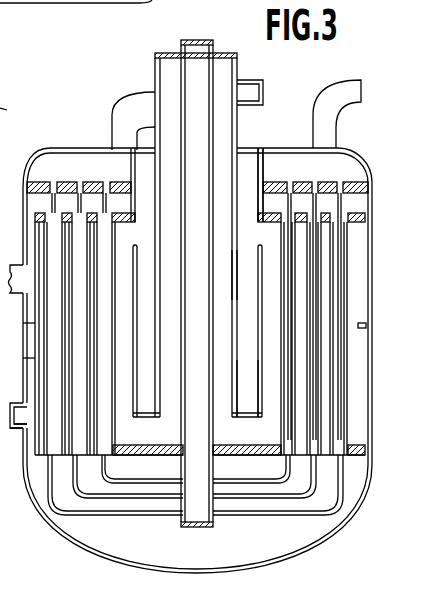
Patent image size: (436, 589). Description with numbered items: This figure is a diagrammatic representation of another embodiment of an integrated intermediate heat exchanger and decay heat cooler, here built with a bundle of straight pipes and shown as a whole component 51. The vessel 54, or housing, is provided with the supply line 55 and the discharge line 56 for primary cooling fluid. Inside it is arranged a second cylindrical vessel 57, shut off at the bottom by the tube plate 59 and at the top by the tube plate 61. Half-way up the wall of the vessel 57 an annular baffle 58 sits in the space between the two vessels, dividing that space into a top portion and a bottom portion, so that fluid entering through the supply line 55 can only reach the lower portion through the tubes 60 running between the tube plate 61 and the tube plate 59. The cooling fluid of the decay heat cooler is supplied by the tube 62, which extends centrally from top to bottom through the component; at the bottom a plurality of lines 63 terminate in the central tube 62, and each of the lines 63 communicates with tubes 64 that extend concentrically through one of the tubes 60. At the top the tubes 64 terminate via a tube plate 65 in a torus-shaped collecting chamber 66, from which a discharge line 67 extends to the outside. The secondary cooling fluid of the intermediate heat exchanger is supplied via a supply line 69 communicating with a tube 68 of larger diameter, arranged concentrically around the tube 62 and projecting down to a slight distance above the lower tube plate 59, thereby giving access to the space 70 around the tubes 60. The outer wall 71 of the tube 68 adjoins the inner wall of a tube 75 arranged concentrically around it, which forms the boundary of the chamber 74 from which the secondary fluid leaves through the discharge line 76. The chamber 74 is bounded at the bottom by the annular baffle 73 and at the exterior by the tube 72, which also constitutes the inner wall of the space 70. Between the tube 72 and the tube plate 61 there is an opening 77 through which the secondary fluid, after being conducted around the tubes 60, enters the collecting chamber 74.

The reactor vessel 51 is at (11, 110).
The vessel 54 is at (50, 540).
The supply line 55 is at (23, 323).
The discharge line 56 is at (17, 432).
The second cylindrical vessel 57 is at (23, 358).
The annular baffle 58 is at (366, 326).
The tube plate 59 is at (152, 453).
The tubes 60 is at (78, 252).
The tube plate 61 is at (62, 205).
The central tube 62 is at (195, 50).
The lines 63 is at (233, 500).
The tubes 64 is at (318, 477).
The tube plate 65 is at (353, 185).
The torus-shaped collecting chamber 66 is at (296, 163).
The discharge line 67 is at (340, 95).
The tube 68 is at (167, 68).
The supply line 69 is at (255, 95).
The space 70 is at (260, 433).
The outer wall 71 is at (236, 387).
The tube 72 is at (261, 200).
The annular baffle 73 is at (143, 413).
The chamber 74 is at (145, 178).
The tube 75 is at (238, 273).
The discharge line 76 is at (115, 103).
The opening 77 is at (261, 233).